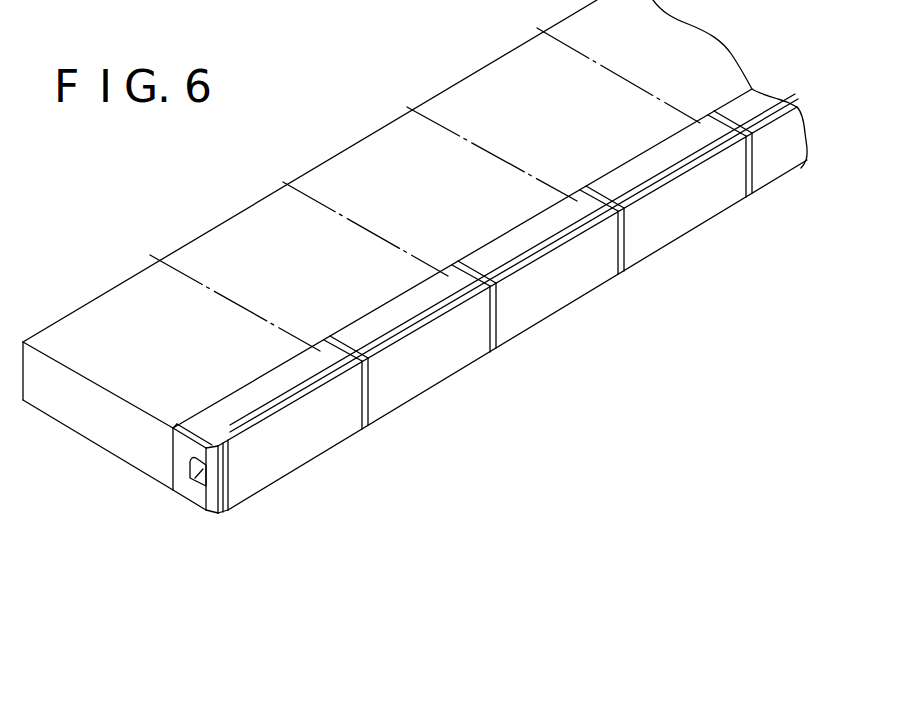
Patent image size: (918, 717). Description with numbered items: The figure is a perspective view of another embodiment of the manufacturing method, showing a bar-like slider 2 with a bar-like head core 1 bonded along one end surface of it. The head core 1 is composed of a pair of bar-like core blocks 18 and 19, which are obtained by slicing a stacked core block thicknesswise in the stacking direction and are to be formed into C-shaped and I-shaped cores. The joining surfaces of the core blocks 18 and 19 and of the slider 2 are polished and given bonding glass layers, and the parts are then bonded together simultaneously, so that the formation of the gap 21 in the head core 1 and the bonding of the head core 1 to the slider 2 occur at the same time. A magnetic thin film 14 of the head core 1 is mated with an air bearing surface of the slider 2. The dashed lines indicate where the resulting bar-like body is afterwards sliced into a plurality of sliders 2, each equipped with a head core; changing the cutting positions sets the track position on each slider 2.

The head core 1 is at (324, 440).
The slider 2 is at (110, 441).
The magnetic thin film 14 is at (202, 428).
The core block 18 is at (186, 496).
The core block 19 is at (215, 513).
The gap 21 is at (250, 418).